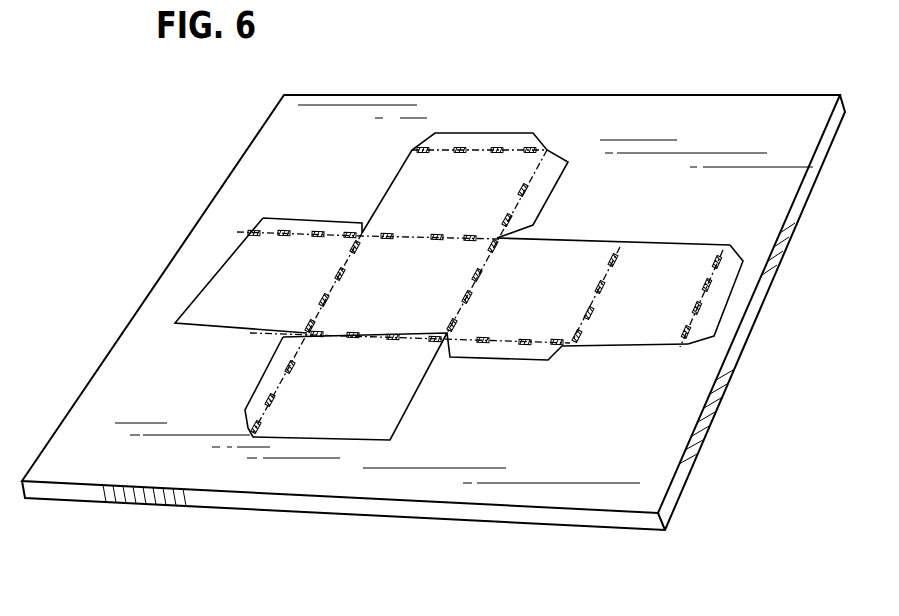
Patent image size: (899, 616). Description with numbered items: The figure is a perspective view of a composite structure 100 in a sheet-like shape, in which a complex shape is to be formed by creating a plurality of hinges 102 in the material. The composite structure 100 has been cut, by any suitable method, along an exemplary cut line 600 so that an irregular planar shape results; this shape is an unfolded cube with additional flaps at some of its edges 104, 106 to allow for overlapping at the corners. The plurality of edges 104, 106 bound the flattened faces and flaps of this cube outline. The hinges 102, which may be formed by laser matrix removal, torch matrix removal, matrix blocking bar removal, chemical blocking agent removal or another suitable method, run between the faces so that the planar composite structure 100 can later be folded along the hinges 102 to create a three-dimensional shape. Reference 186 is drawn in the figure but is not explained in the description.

The composite structure 100 is at (672, 103).
The hinges 102 is at (478, 290).
The edges 104 is at (712, 268).
The edges 106 is at (254, 233).
The connection pad 186 is at (523, 190).
The cut line 600 is at (726, 307).